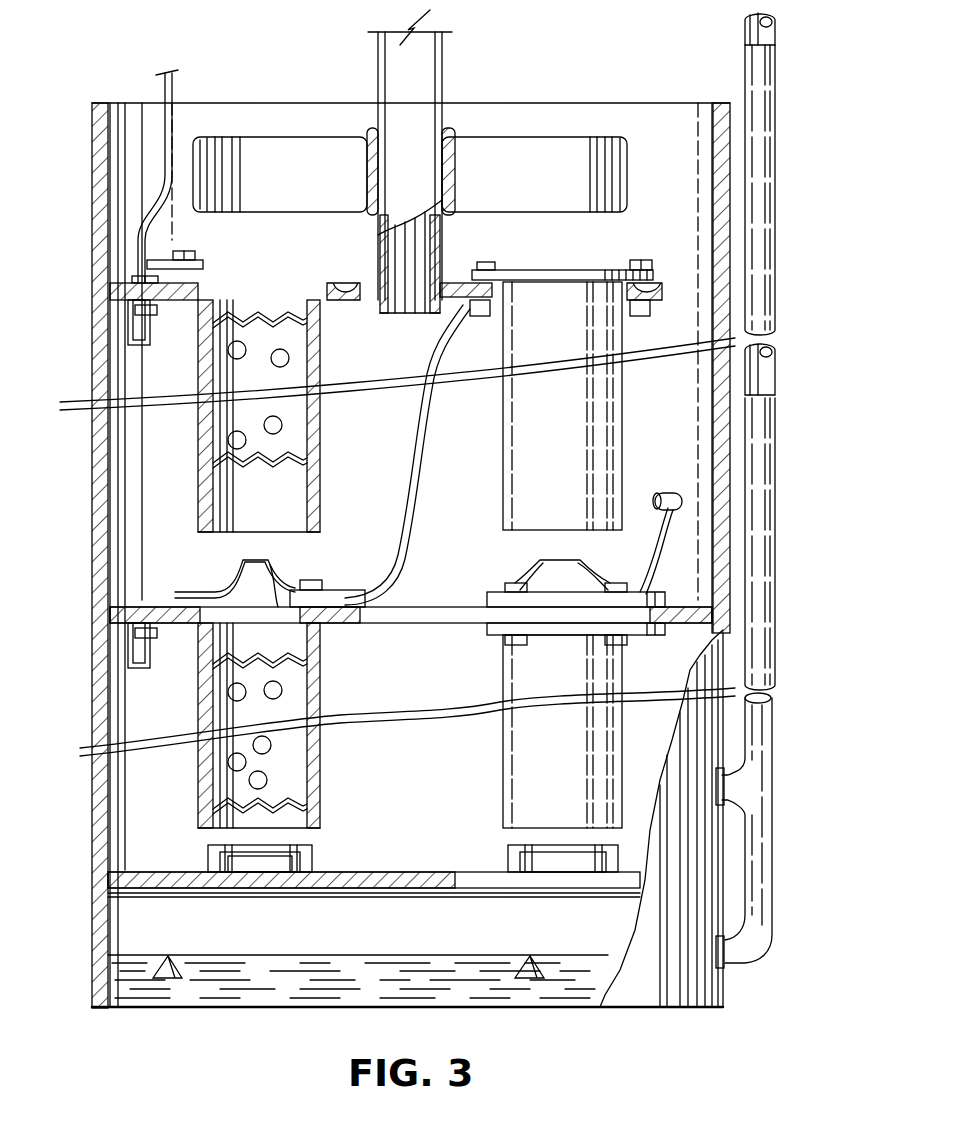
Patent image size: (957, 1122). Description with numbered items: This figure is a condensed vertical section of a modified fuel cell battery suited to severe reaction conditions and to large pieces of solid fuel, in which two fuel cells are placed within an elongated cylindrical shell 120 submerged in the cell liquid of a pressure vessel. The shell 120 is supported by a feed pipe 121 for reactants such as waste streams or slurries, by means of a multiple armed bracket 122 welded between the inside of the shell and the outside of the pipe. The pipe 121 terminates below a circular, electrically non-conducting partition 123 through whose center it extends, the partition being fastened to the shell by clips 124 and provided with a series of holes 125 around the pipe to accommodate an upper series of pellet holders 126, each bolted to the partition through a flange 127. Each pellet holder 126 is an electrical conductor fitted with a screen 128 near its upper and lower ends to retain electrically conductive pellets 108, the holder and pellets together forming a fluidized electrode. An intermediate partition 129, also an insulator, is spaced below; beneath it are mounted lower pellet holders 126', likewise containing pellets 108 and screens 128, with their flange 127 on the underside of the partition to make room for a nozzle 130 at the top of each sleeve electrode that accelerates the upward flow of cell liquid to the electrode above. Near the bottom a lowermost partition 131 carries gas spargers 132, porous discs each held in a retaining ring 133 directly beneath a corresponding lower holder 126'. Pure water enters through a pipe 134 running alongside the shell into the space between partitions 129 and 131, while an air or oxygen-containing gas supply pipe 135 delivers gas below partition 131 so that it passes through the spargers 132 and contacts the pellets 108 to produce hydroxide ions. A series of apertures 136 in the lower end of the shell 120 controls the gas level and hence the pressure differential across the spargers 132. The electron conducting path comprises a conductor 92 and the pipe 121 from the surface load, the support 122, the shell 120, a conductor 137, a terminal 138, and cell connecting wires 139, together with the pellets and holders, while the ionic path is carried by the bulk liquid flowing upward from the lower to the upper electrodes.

The conductor 92 is at (170, 86).
The pellets 108 is at (246, 350).
The shell 120 is at (105, 162).
The feed pipe 121 is at (444, 62).
The multiple armed bracket 122 is at (292, 140).
The partition 123 is at (135, 272).
The clips 124 is at (135, 350).
The holes 125 is at (335, 298).
The pellet holder 126 is at (410, 407).
The pellet holder 126' is at (410, 725).
The flange 127 is at (360, 272).
The screen 128 is at (250, 316).
The intermediate partition 129 is at (138, 595).
The nozzle 130 is at (278, 572).
The lowermost partition 131 is at (392, 872).
The gas sparger 132 is at (262, 864).
The retaining ring 133 is at (210, 868).
The pipe 134 is at (770, 268).
The gas supply pipe 135 is at (778, 30).
The apertures 136 is at (175, 958).
The conductor 137 is at (670, 568).
The terminal 138 is at (670, 492).
The cell connecting wires 139 is at (395, 512).